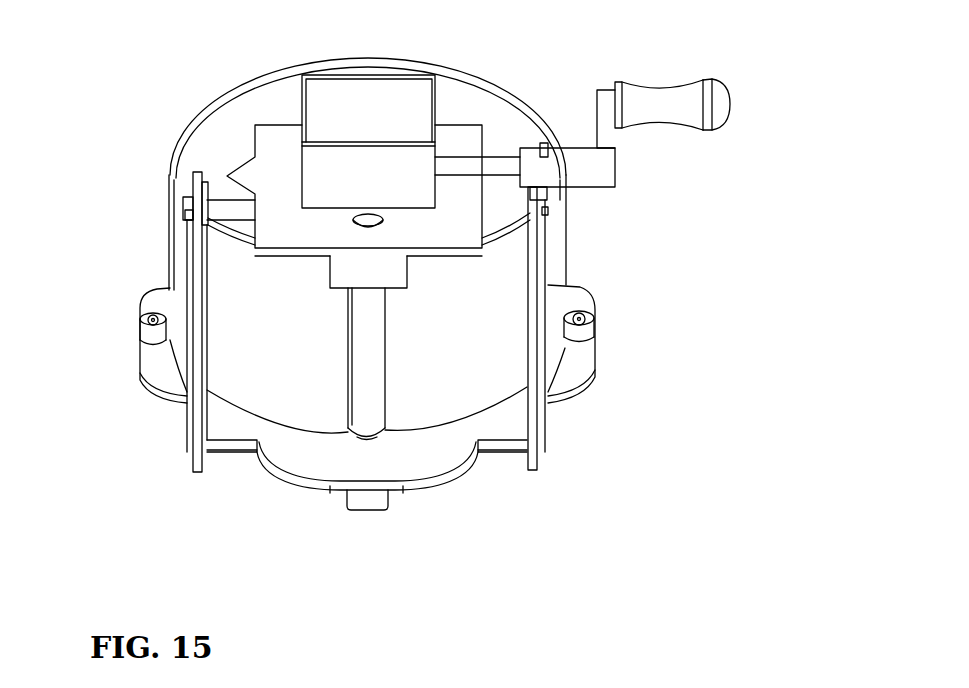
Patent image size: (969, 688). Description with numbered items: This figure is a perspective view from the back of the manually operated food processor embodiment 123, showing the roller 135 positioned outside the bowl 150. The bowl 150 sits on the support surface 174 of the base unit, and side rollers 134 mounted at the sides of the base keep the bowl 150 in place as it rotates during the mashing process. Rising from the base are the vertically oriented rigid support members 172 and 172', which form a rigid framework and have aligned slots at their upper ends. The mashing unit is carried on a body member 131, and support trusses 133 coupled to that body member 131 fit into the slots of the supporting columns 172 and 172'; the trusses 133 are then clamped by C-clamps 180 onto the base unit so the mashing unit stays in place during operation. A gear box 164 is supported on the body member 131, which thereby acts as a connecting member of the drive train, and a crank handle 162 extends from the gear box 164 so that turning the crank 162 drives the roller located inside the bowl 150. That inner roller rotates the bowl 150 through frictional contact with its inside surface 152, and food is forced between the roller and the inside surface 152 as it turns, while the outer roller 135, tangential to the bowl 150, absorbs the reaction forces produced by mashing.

The embodiment 123 is at (848, 423).
The body member 131 is at (434, 135).
The support trusses 133 is at (415, 178).
The side rollers 134 is at (140, 332).
The roller 135 is at (228, 403).
The bowl 150 is at (168, 236).
The inside surface 152 is at (304, 151).
The crank handle 162 is at (716, 94).
The gear box 164 is at (248, 110).
The rigid support member 172 is at (670, 328).
The rigid support member 172' is at (123, 322).
The support surface 174 is at (446, 481).
The C-clamps 180 is at (188, 463).